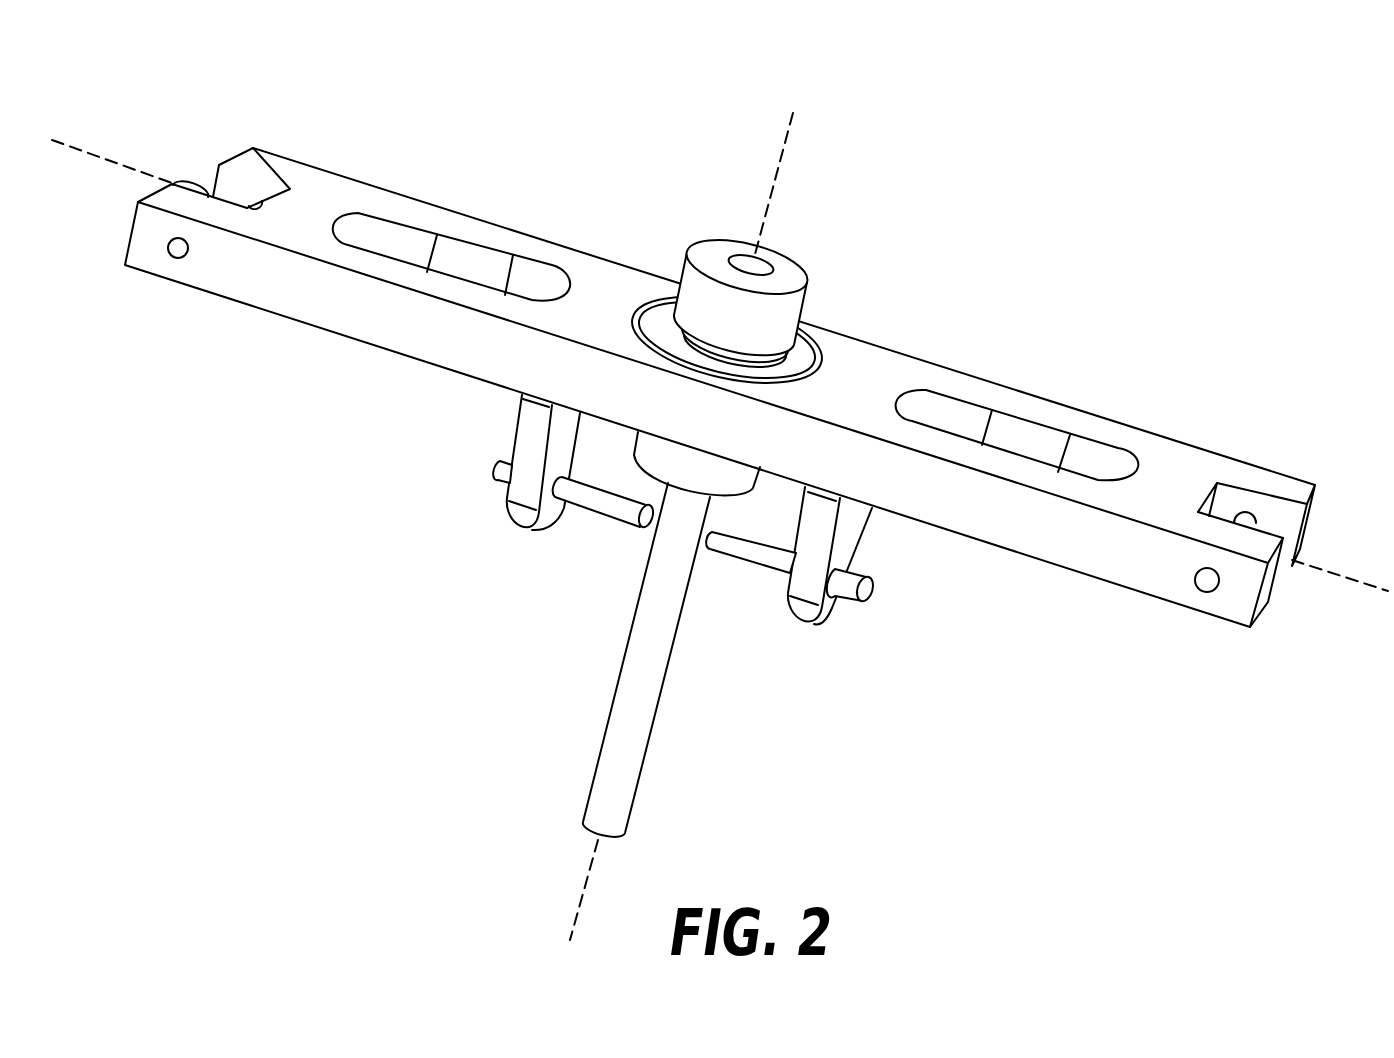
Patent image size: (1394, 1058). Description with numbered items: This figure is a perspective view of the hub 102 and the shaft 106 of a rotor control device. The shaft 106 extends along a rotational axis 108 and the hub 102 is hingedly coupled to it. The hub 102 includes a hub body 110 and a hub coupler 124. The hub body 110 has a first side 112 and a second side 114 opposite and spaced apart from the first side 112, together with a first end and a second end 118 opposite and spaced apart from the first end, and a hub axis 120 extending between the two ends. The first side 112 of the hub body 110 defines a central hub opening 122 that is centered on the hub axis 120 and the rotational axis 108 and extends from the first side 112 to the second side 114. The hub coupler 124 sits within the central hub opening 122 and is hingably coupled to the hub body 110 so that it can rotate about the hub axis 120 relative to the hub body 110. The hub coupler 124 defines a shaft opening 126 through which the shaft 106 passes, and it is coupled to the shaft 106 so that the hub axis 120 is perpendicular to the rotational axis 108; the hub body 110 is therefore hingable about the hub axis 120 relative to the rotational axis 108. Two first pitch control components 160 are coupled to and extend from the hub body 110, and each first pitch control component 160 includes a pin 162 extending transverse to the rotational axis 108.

The hub 102 is at (1084, 128).
The shaft 106 is at (662, 724).
The rotational axis 108 is at (583, 897).
The hub body 110 is at (414, 184).
The first side 112 is at (237, 147).
The second side 114 is at (400, 358).
The second end 118 is at (1322, 503).
The hub axis 120 is at (70, 149).
The central hub opening 122 is at (838, 340).
The hub coupler 124 is at (660, 320).
The shaft opening 126 is at (771, 372).
The first pitch control component 160 is at (503, 438).
The pin 162 is at (588, 513).